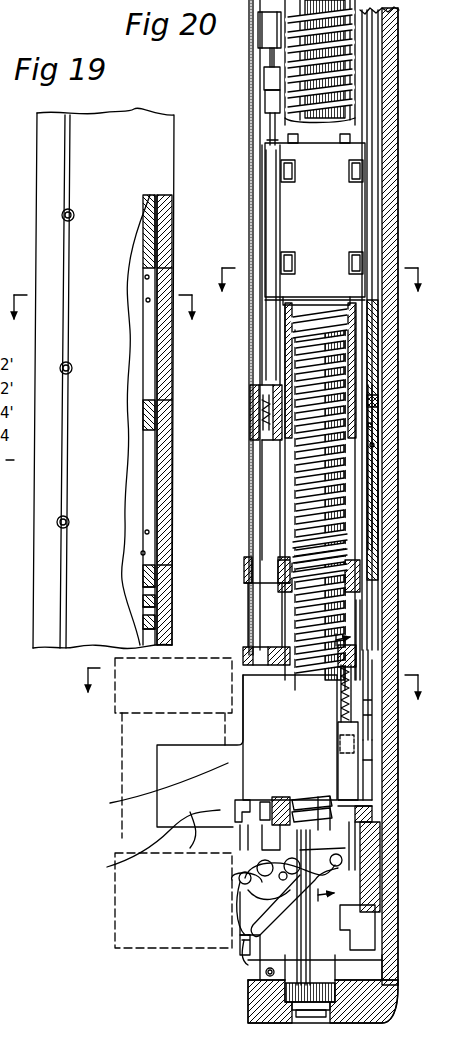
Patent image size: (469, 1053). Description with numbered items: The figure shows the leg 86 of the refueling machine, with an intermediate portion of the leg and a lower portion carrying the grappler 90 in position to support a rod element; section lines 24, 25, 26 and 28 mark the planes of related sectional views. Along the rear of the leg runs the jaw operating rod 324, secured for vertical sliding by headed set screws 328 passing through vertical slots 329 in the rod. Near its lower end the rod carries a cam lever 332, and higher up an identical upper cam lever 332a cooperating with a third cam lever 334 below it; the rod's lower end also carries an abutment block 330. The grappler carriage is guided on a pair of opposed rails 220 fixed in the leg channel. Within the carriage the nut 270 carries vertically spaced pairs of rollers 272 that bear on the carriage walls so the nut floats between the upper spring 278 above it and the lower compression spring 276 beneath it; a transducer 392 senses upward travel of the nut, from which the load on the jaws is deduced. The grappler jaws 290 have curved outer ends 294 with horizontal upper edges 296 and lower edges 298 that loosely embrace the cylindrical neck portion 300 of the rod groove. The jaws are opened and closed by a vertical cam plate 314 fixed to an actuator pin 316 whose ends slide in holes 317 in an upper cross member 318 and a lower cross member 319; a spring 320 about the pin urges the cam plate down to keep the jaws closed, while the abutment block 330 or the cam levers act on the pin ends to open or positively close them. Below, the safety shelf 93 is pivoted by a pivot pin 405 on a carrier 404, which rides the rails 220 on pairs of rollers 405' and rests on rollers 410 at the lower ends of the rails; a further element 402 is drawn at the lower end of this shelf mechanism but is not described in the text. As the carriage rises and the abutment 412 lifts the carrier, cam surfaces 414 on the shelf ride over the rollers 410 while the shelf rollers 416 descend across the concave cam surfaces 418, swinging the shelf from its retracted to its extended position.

In FIG. 19, the leg 86 is at (132, 112).
In FIG. 20, the leg 86 is at (247, 104).
In FIG. 19, the jaw operating rod 324 is at (165, 237).
In FIG. 20, the jaw operating rod 324 is at (376, 377).
In FIG. 19, the upper cam lever 332a is at (150, 362).
In FIG. 19, the third cam lever 334 is at (150, 462).
In FIG. 19, the section line 26 is at (103, 318).
In FIG. 20, the upper spring 278 is at (356, 40).
In FIG. 20, the abutment 412 is at (257, 35).
In FIG. 20, the transducer 392 is at (265, 80).
In FIG. 20, the nut 270 is at (370, 198).
In FIG. 20, the rollers 272 is at (350, 252).
In FIG. 20, the cam lever 332 is at (370, 478).
In FIG. 20, the lower compression spring 276 is at (340, 540).
In FIG. 20, the upper cross member 318 is at (366, 660).
In FIG. 20, the headed set screws 328 is at (378, 700).
In FIG. 20, the section line 28 is at (342, 764).
In FIG. 20, the grappler 90 is at (160, 770).
In FIG. 20, the spring 320 is at (342, 690).
In FIG. 20, the upper edges 296 is at (176, 730).
In FIG. 20, the grappler jaws 290 is at (153, 788).
In FIG. 20, the cylindrical neck portion 300 is at (130, 832).
In FIG. 20, the lower edges 298 is at (144, 844).
In FIG. 20, the outer ends 294 is at (179, 845).
In FIG. 20, the section line 24 is at (252, 694).
In FIG. 20, the section line 25 is at (319, 290).
In FIG. 20, the vertical slots 329 is at (373, 745).
In FIG. 20, the cam plate 314 is at (350, 760).
In FIG. 20, the holes 317 is at (355, 800).
In FIG. 20, the lower cross member 319 is at (365, 814).
In FIG. 20, the actuator pin 316 is at (360, 830).
In FIG. 20, the cam surfaces 414 is at (345, 850).
In FIG. 20, the rollers 416 is at (342, 860).
In FIG. 20, the cam surfaces 418 is at (340, 876).
In FIG. 20, the abutment block 330 is at (358, 935).
In FIG. 20, the rails 220 is at (250, 802).
In FIG. 20, the rollers 405' is at (312, 800).
In FIG. 20, the carrier 404 is at (258, 866).
In FIG. 20, the pivot pin 405 is at (220, 889).
In FIG. 20, the rollers 410 is at (292, 905).
In FIG. 20, the safety shelf 93 is at (242, 918).
In FIG. 20, the pivot 402 is at (245, 940).